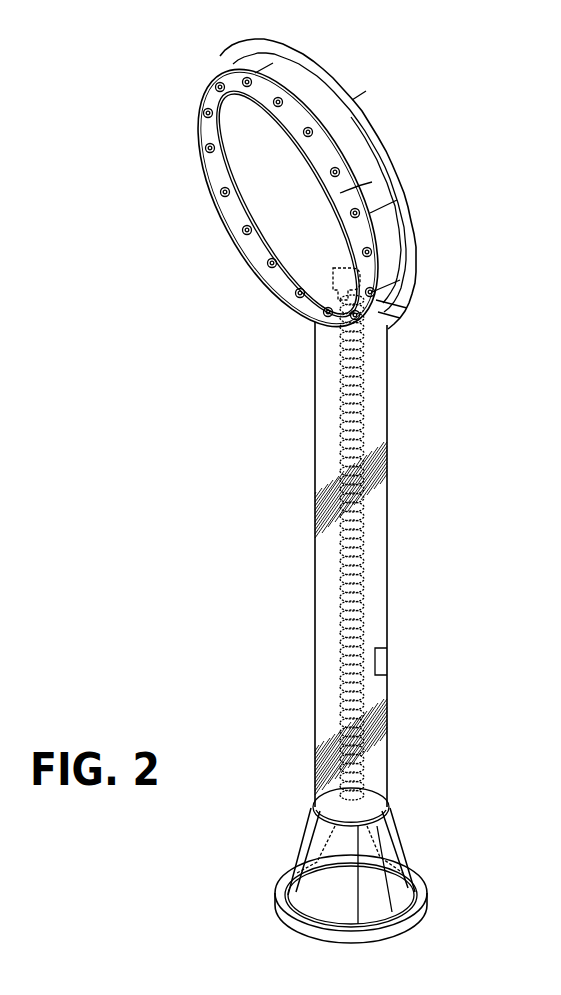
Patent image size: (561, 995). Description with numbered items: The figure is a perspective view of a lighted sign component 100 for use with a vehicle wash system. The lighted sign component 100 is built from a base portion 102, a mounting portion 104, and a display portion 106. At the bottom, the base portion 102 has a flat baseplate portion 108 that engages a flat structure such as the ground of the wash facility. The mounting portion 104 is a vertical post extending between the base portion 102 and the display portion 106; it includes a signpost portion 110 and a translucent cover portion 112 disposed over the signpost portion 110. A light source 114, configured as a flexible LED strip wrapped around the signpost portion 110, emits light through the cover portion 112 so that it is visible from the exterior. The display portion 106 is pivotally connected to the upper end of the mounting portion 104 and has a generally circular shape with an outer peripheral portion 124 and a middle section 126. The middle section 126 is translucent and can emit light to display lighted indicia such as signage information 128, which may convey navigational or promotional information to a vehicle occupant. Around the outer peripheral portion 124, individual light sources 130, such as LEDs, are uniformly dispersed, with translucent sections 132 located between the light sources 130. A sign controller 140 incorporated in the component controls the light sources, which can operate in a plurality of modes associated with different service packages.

The lighted sign component 100 is at (453, 141).
The base portion 102 is at (403, 836).
The mounting portion 104 is at (387, 585).
The display portion 106 is at (373, 127).
The baseplate portion 108 is at (425, 908).
The signpost portion 110 is at (365, 392).
The cover portion 112 is at (387, 462).
The light source 114 is at (365, 522).
The outer peripheral portion 124 is at (372, 182).
The middle section 126 is at (303, 202).
The signage information 128 is at (246, 164).
The light sources 130 is at (372, 250).
The sections 132 is at (280, 280).
The sign controller 140 is at (385, 660).